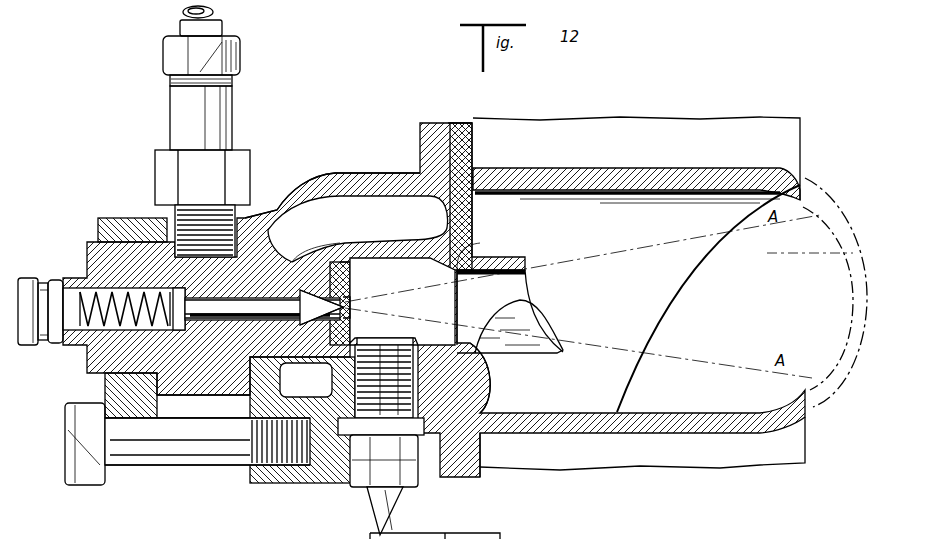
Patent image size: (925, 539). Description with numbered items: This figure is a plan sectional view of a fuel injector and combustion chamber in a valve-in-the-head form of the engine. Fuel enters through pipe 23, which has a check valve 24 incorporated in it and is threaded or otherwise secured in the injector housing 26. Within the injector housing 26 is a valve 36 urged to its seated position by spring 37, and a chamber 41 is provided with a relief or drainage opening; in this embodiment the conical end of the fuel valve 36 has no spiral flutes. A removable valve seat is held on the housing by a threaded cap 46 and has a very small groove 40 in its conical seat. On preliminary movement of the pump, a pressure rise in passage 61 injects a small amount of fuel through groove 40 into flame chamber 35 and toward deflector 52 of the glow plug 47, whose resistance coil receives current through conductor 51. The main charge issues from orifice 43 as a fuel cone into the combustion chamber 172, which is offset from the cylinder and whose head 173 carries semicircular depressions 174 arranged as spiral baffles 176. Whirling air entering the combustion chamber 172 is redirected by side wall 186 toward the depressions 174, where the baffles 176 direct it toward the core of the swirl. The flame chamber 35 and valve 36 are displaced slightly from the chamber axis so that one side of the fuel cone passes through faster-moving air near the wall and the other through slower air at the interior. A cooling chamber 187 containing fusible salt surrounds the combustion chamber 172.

The pipe 23 is at (220, 12).
The check valve 24 is at (240, 172).
The injector housing 26 is at (87, 250).
The spring 37 is at (80, 290).
The chamber 41 is at (80, 344).
The valve 36 is at (214, 322).
The combustion chamber head 173 is at (351, 178).
The passage 61 is at (287, 238).
The groove 40 is at (340, 290).
The cooling chamber 187 is at (406, 221).
The semicircular depressions 174 is at (478, 246).
The orifice 43 is at (352, 300).
The flame chamber 35 is at (422, 276).
The threaded cap 46 is at (350, 320).
The deflector 52 is at (383, 334).
The spiral baffles 176 is at (544, 328).
The combustion chamber 172 is at (650, 297).
The side wall 186 is at (695, 423).
The glow plug 47 is at (408, 498).
The conductor 51 is at (468, 538).